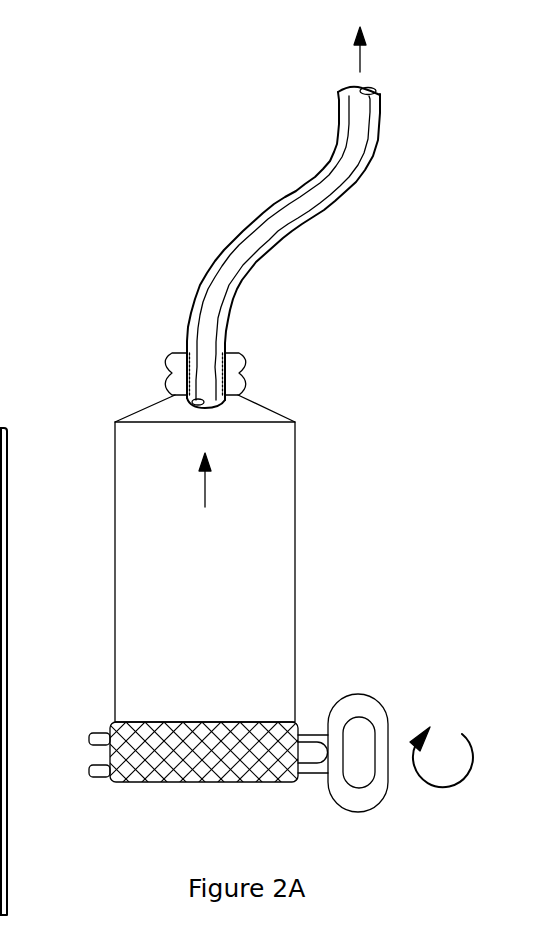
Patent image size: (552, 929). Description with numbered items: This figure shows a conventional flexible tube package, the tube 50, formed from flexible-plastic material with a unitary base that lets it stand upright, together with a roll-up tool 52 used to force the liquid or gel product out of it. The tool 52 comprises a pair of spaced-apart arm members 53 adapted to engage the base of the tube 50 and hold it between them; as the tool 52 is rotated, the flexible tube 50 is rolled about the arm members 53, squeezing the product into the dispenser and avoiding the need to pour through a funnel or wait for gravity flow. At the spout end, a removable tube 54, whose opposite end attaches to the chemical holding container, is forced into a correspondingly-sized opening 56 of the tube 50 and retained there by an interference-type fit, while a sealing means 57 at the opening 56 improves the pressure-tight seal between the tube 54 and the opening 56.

The tube 50 is at (278, 564).
The roll-up tool 52 is at (395, 689).
The arm members 53 is at (82, 758).
The tube 54 is at (382, 187).
The opening 56 is at (258, 363).
The sealing means 57 is at (173, 347).